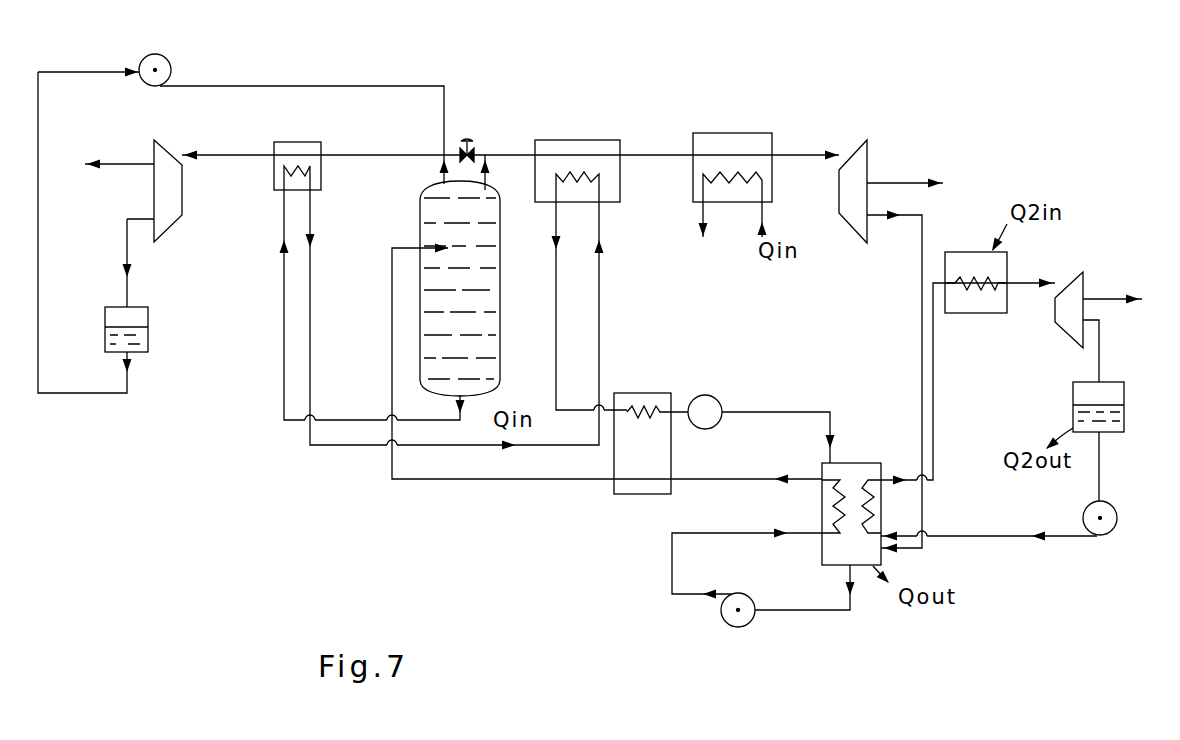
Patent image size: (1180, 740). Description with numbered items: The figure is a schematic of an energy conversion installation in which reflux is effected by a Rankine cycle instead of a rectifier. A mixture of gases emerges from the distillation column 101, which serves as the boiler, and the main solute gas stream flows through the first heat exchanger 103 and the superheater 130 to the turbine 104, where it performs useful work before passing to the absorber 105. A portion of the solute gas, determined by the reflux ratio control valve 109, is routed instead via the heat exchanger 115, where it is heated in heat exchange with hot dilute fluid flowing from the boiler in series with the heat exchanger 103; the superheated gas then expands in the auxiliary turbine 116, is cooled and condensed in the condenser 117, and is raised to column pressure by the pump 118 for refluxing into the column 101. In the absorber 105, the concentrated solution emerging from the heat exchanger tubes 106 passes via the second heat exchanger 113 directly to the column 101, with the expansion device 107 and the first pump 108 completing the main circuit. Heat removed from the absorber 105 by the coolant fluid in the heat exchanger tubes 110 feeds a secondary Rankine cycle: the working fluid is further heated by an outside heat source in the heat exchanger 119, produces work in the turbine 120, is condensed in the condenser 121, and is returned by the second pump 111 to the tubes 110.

The distillation column 101 is at (498, 236).
The first heat exchanger 103 is at (582, 140).
The turbine 104 is at (869, 148).
The absorber 105 is at (852, 463).
The absorber heat exchanger tubes 106 is at (832, 506).
The expansion device 107 is at (717, 399).
The first pump 108 is at (724, 621).
The control valve 109 is at (472, 149).
The absorber heat exchanger tubes 110 is at (868, 511).
The second pump 111 is at (1114, 531).
The second heat exchanger 113 is at (632, 393).
The heat exchanger 115 is at (290, 142).
The auxiliary turbine 116 is at (160, 141).
The condenser 117 is at (149, 318).
The pump 118 is at (166, 58).
The heat exchanger 119 is at (957, 252).
The turbine 120 is at (1085, 276).
The condenser 121 is at (1125, 398).
The superheater 130 is at (748, 133).